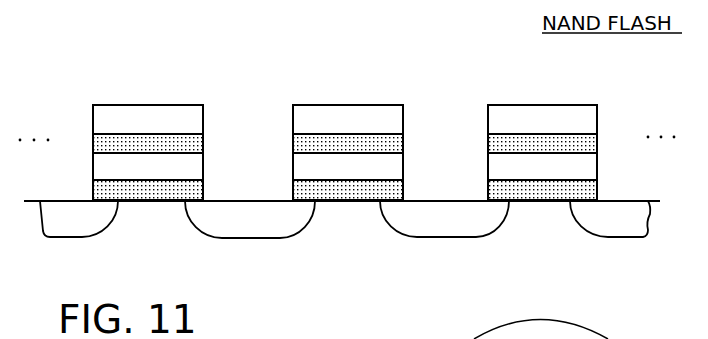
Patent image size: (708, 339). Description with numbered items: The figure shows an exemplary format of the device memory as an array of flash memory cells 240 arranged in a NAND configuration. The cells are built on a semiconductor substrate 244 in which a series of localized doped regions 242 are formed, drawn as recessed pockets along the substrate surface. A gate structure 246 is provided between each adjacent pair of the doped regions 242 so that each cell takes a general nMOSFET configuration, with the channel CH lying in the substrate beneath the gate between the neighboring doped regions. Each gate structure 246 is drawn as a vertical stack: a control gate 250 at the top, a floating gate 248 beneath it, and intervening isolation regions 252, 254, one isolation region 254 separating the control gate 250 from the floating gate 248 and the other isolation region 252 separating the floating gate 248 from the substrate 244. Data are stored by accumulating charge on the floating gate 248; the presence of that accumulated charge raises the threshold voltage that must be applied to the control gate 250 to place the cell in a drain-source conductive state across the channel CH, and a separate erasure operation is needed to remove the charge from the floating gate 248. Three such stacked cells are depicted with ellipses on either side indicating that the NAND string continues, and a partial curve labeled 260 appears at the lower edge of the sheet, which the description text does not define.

The flash memory cells 240 is at (108, 54).
The localized doped regions 242 is at (252, 240).
The semiconductor substrate 244 is at (156, 248).
The gate structure 246 is at (318, 104).
The floating gate 248 is at (292, 165).
The control gate 250 is at (348, 105).
The isolation region 252 is at (404, 190).
The isolation region 254 is at (404, 140).
The enlarged region 260 is at (606, 338).